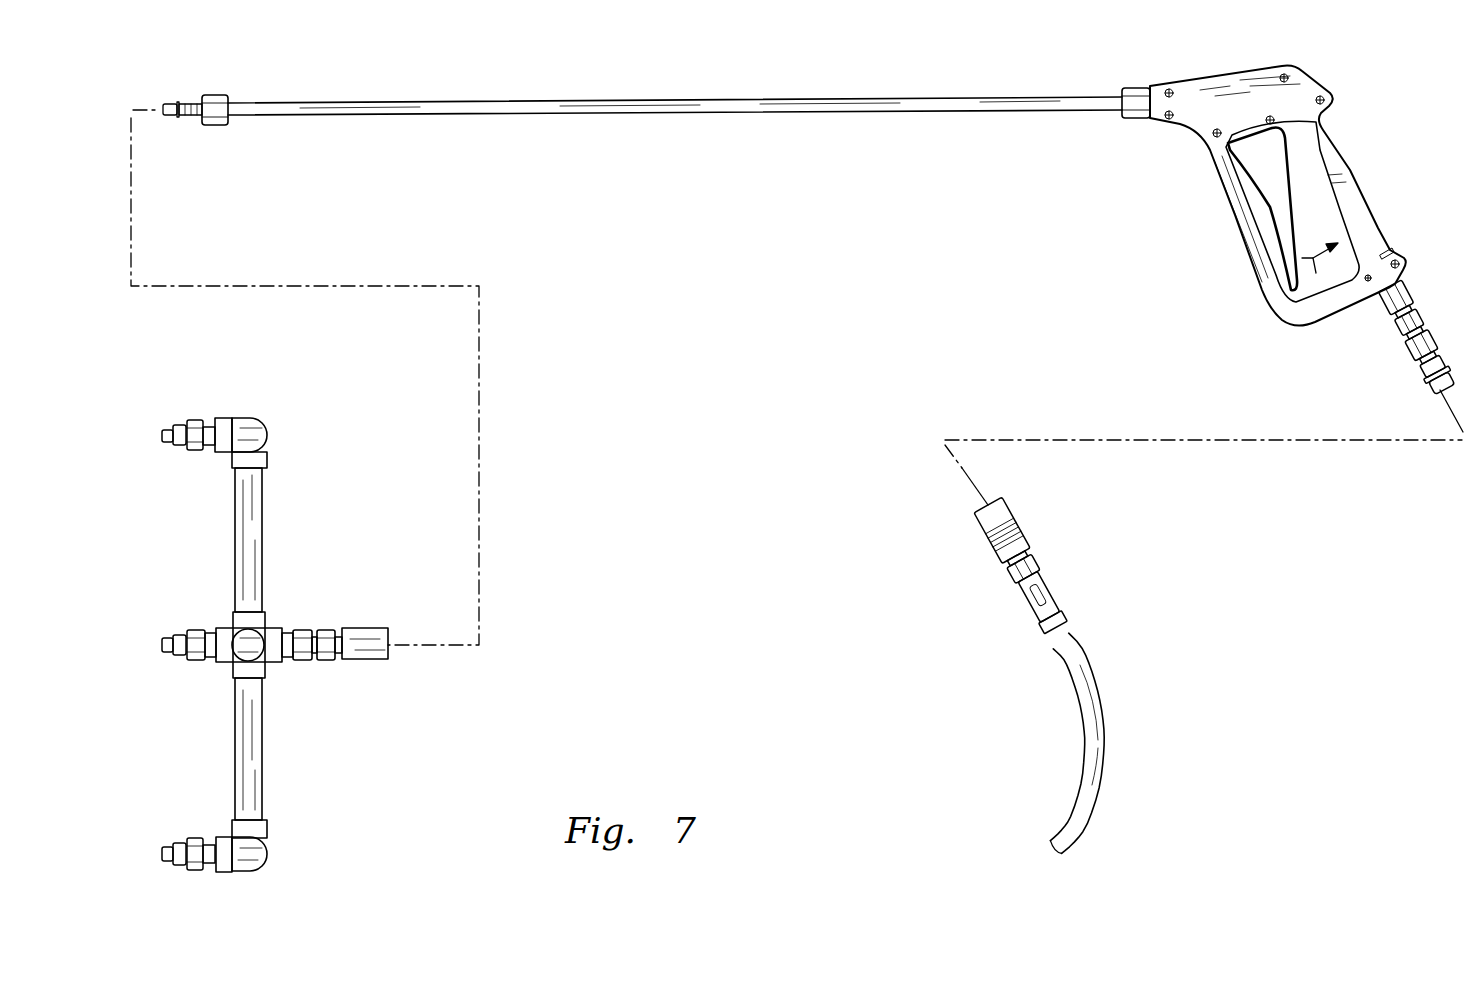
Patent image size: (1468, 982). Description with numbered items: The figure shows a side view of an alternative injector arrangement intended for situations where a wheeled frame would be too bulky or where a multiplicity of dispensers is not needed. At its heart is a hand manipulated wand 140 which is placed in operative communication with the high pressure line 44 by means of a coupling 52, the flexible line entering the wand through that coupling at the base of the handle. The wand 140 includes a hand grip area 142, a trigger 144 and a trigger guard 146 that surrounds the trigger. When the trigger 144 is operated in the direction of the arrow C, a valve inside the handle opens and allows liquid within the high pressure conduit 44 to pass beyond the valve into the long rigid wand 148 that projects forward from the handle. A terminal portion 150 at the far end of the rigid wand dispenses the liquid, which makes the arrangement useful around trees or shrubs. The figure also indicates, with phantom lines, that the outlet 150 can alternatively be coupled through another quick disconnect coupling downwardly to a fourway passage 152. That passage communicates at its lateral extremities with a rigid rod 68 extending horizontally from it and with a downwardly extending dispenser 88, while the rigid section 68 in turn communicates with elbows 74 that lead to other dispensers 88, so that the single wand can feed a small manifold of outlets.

The hand manipulated wand 140 is at (1108, 202).
The hand grip area 142 is at (1363, 198).
The trigger 144 is at (1285, 205).
The trigger guard 146 is at (1250, 254).
The rigid wand 148 is at (700, 103).
The terminal portion 150 is at (218, 98).
The fourway passage 152 is at (238, 632).
The rigid rod 68 is at (247, 565).
The elbow 74 is at (262, 420).
The dispenser 88 is at (165, 442).
The coupling 52 is at (1005, 500).
The high pressure line 44 is at (1098, 702).